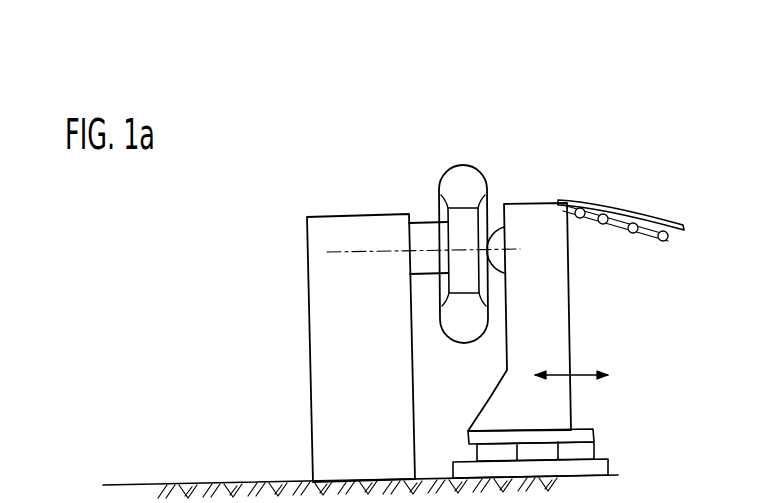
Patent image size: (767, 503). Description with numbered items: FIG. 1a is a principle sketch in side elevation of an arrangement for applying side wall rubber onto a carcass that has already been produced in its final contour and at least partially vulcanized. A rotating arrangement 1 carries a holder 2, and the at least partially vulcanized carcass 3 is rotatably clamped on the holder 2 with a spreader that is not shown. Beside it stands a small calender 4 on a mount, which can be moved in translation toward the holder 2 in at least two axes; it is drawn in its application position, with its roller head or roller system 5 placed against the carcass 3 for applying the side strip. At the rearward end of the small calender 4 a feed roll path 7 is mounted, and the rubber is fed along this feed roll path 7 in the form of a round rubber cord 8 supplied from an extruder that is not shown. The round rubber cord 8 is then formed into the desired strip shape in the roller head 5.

The rotating arrangement 1 is at (330, 362).
The holder 2 is at (425, 235).
The carcass 3 is at (453, 180).
The small calender 4 is at (533, 227).
The roller head 5 is at (493, 232).
The feed roll path 7 is at (634, 233).
The round rubber cord 8 is at (687, 224).